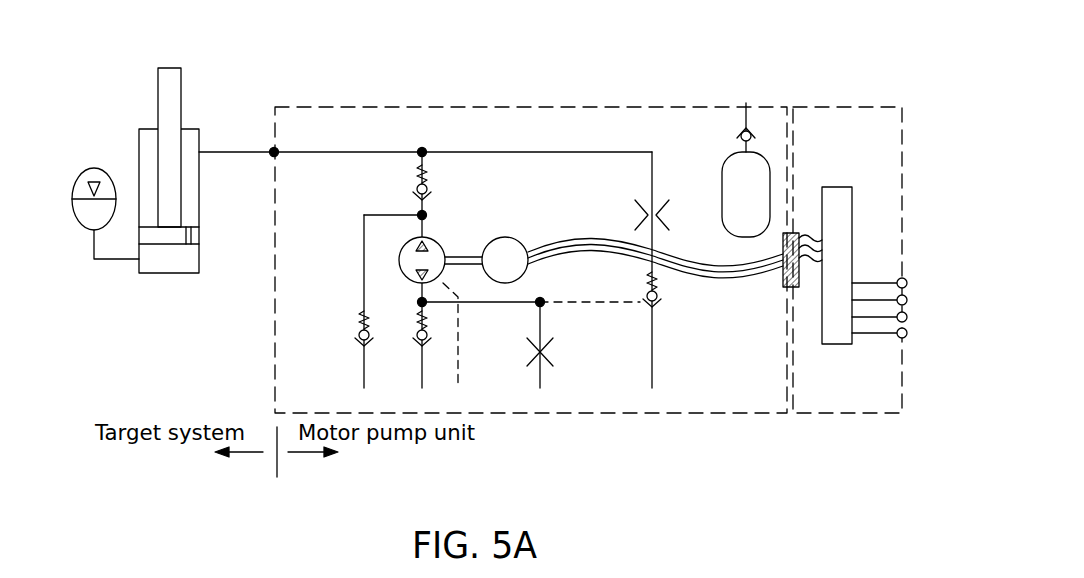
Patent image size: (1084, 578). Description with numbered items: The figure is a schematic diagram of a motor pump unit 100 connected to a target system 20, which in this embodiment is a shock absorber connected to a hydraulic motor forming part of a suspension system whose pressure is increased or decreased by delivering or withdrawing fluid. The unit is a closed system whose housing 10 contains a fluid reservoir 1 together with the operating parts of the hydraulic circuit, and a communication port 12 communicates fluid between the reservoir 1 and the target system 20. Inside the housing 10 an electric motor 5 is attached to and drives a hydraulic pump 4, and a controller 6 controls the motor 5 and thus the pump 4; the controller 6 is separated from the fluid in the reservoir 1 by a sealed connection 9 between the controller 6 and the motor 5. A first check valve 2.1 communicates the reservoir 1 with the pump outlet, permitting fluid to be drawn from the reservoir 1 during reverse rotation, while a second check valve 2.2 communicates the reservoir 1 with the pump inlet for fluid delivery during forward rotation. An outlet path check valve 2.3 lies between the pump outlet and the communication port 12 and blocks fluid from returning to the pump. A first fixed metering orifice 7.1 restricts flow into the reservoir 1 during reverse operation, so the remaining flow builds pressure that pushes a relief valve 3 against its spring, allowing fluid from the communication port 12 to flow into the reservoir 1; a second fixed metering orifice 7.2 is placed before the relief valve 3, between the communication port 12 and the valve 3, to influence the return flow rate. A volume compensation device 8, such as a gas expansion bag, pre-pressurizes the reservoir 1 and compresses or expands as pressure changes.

The fluid reservoir 1 is at (298, 406).
The first check valve 2.1 is at (358, 330).
The second check valve 2.2 is at (427, 333).
The outlet path check valve 2.3 is at (417, 187).
The relief valve 3 is at (659, 297).
The hydraulic pump 4 is at (436, 242).
The electric motor 5 is at (504, 237).
The controller 6 is at (838, 187).
The first fixed metering orifice 7.1 is at (554, 355).
The second fixed metering orifice 7.2 is at (635, 214).
The volume compensation device 8 is at (722, 172).
The sealed connection 9 is at (783, 282).
The housing 10 is at (578, 94).
The communication port 12 is at (262, 134).
The target system 20 is at (142, 72).
The motor pump unit 100 is at (852, 95).